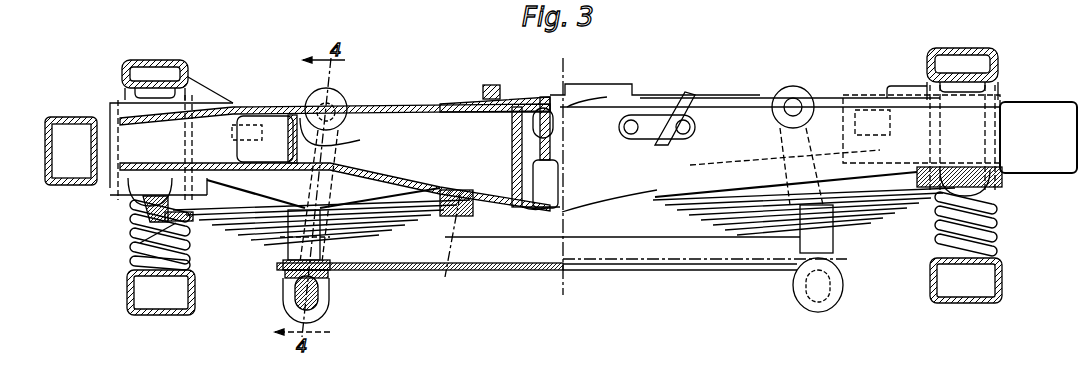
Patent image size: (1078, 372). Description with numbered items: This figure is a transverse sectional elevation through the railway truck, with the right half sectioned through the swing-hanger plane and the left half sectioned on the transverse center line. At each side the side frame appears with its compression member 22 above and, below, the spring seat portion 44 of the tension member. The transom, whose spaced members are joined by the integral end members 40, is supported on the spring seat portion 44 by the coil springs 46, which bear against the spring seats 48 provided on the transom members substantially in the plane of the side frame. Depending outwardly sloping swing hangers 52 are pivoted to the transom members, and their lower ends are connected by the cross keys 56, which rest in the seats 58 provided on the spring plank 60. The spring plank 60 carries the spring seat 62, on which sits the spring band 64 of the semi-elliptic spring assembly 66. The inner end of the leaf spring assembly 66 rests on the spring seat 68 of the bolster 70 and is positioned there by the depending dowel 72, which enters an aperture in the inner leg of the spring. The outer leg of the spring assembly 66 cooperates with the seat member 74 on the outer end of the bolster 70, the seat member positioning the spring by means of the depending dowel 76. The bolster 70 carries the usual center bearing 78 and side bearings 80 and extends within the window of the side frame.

The compression member 22 is at (158, 60).
The integral end members 40 is at (45, 148).
The spring seat portion 44 is at (160, 315).
The coil springs 46 is at (127, 276).
The spring seats 48 is at (125, 199).
The swing hangers 52 is at (345, 174).
The cross keys 56 is at (295, 294).
The seats 58 is at (330, 277).
The spring plank 60 is at (506, 271).
The spring seat 62 is at (283, 266).
The spring band 64 is at (373, 257).
The semi-elliptic spring assembly 66 is at (225, 237).
The spring seat 68 is at (468, 216).
The bolster 70 is at (543, 209).
The depending dowel 72 is at (443, 245).
The seat member 74 is at (140, 220).
The depending dowel 76 is at (140, 243).
The center bearing 78 is at (505, 95).
The side bearings 80 is at (283, 107).